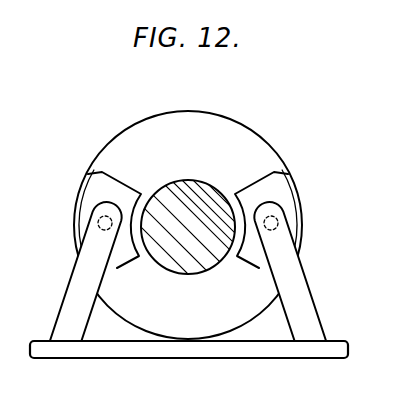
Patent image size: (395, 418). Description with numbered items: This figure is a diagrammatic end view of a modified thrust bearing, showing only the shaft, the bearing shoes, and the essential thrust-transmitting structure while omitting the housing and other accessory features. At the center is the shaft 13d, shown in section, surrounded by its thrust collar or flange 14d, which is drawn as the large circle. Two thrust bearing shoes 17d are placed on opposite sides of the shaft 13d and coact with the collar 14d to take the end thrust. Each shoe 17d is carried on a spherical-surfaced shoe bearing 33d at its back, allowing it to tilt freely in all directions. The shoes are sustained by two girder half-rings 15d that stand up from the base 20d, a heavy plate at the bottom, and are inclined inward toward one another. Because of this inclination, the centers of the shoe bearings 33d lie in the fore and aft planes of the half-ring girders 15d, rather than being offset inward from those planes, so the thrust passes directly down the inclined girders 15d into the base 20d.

The thrust collar 14d is at (212, 93).
The shaft 13d is at (191, 180).
The thrust bearing shoe 17d is at (92, 174).
The girder half-ring 15d is at (78, 284).
The shoe bearing 33d is at (98, 222).
The base 20d is at (193, 358).